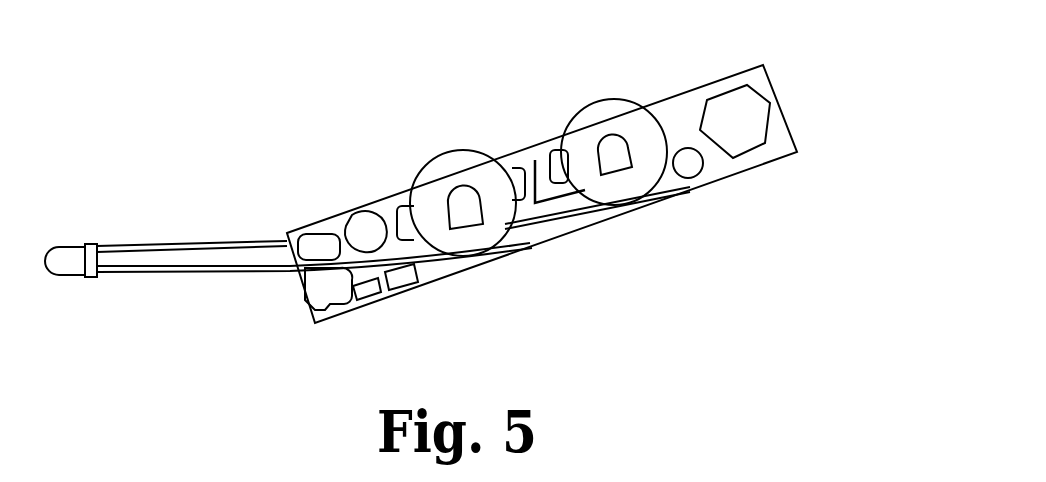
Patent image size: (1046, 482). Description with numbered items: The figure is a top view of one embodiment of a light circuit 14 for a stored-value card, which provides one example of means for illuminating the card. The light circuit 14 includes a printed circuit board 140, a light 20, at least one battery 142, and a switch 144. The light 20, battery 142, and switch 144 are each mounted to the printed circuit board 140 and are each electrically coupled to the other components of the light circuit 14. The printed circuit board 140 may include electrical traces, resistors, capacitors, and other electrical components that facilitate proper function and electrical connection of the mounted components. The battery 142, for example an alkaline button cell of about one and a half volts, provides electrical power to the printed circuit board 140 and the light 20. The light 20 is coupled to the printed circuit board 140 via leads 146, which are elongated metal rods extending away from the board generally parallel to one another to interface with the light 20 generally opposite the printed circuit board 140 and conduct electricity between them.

The light circuit 14 is at (590, 161).
The light 20 is at (66, 263).
The printed circuit board 140 is at (667, 187).
The battery 142 is at (582, 131).
The switch 144 is at (748, 127).
The leads 146 is at (186, 268).